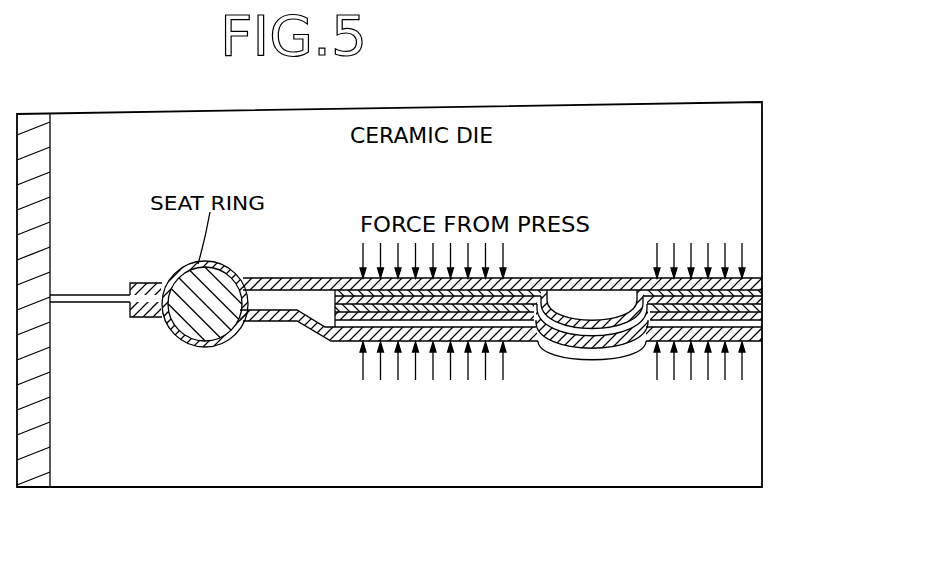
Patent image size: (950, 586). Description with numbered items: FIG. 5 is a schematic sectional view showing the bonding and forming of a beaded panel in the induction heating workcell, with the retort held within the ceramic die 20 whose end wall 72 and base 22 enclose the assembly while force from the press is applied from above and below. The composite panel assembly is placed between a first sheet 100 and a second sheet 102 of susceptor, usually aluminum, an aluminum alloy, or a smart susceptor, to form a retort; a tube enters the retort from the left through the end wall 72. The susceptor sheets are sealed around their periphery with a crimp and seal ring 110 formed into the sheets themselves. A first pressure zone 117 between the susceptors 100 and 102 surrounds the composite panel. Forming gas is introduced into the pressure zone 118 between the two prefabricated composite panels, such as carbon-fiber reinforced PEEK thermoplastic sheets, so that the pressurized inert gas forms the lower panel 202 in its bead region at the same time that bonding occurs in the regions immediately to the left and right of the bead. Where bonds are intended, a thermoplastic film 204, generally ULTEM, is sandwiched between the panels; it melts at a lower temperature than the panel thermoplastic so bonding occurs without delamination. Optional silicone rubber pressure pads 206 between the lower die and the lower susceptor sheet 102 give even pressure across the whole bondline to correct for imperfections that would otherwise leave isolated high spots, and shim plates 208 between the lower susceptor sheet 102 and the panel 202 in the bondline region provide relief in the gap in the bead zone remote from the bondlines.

The ceramic die 20 is at (628, 96).
The die base 22 is at (157, 499).
The die end wall 72 is at (43, 113).
The first sheet 100 is at (130, 310).
The second sheet 102 is at (273, 302).
The crimp and seal ring 110 is at (250, 282).
The first pressure zone 117 is at (313, 292).
The pressure zone 118 is at (603, 302).
The panel 202 is at (620, 350).
The thermoplastic film 204 is at (763, 292).
The silicone rubber pressure pads 206 is at (763, 330).
The shim plates 208 is at (763, 314).